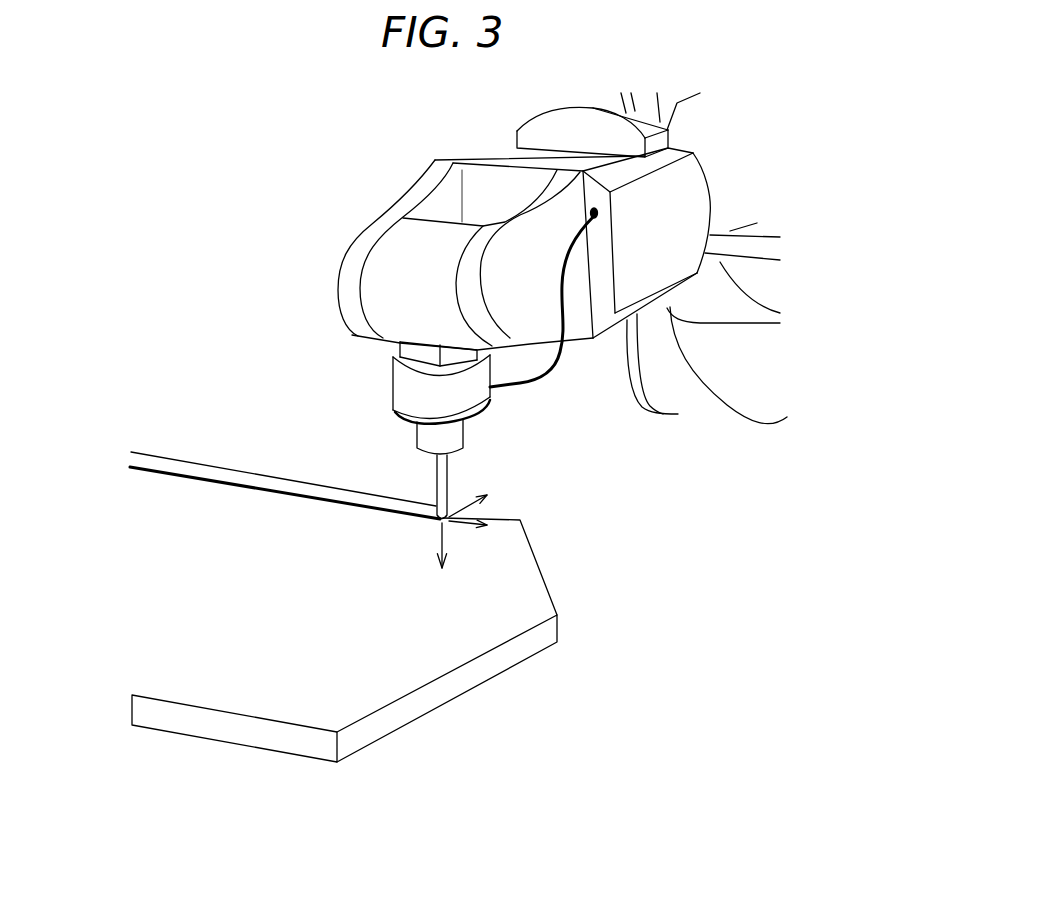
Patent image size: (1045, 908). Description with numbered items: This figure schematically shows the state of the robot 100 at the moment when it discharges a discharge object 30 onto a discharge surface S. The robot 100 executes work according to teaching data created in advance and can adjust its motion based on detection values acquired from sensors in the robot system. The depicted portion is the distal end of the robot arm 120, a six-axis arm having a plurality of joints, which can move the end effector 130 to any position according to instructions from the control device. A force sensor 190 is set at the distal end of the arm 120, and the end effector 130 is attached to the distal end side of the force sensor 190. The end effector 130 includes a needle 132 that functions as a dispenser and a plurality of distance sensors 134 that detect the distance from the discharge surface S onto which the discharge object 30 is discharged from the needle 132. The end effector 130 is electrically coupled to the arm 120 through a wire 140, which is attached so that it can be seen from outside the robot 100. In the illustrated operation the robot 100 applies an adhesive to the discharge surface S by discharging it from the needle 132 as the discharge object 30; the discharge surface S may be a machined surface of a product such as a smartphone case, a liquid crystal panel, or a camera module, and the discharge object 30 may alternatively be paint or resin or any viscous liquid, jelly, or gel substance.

The robot 100 is at (163, 170).
The robot arm 120 is at (300, 265).
The end effector 130 is at (549, 432).
The needle 132 is at (449, 474).
The distance sensors 134 is at (463, 455).
The wire 140 is at (527, 380).
The force sensor 190 is at (393, 368).
The discharge object 30 is at (341, 503).
The discharge surface S is at (345, 710).